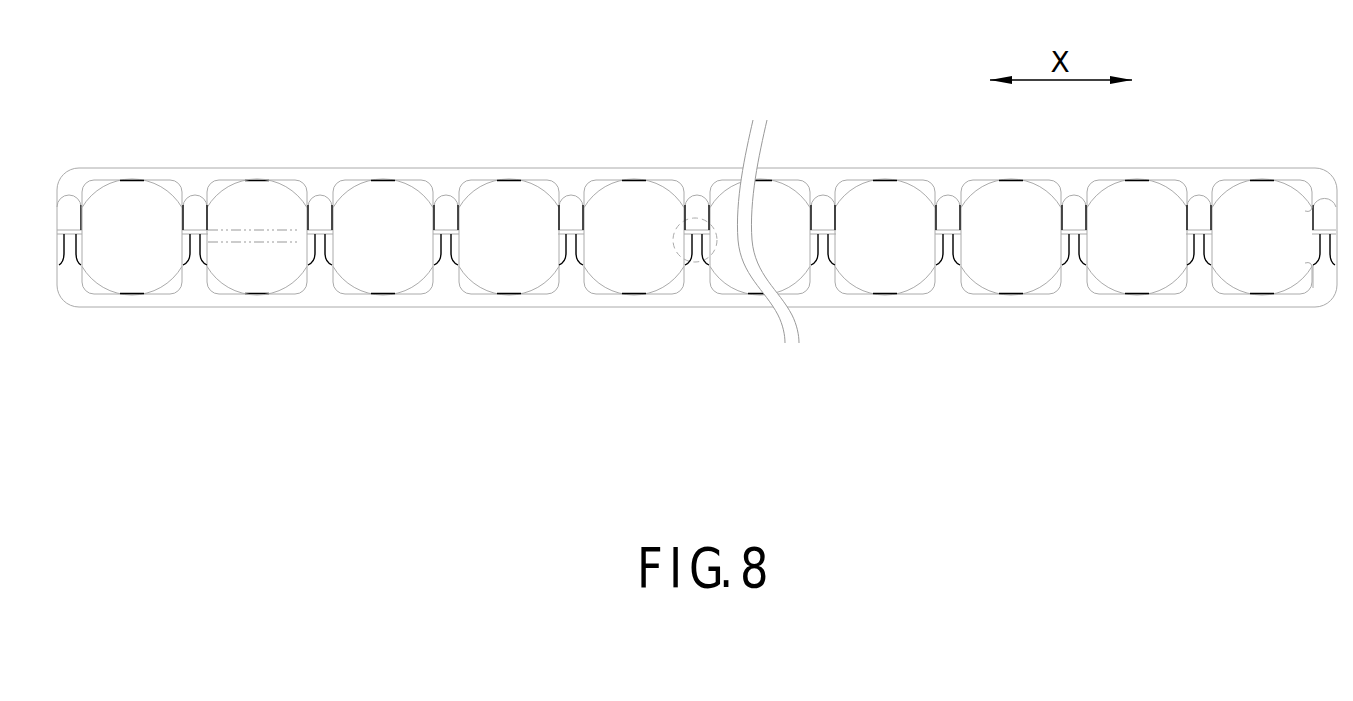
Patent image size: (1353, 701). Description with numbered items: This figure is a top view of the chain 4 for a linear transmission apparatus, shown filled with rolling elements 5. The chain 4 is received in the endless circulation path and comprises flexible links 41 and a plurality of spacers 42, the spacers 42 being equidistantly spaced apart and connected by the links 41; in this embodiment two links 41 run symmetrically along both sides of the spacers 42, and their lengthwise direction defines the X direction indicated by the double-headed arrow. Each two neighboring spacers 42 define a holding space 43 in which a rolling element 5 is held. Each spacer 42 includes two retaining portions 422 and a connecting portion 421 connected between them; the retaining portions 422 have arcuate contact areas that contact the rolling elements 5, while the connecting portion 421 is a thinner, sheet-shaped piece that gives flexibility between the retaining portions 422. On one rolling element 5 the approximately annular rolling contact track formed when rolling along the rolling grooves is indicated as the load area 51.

The chain 4 is at (91, 140).
The flexible link 41 is at (221, 172).
The spacer 42 is at (487, 236).
The connecting portion 421 is at (570, 245).
The retaining portion 422 is at (445, 222).
The holding space 43 is at (547, 187).
The rolling element 5 is at (270, 203).
The load area 51 is at (252, 238).